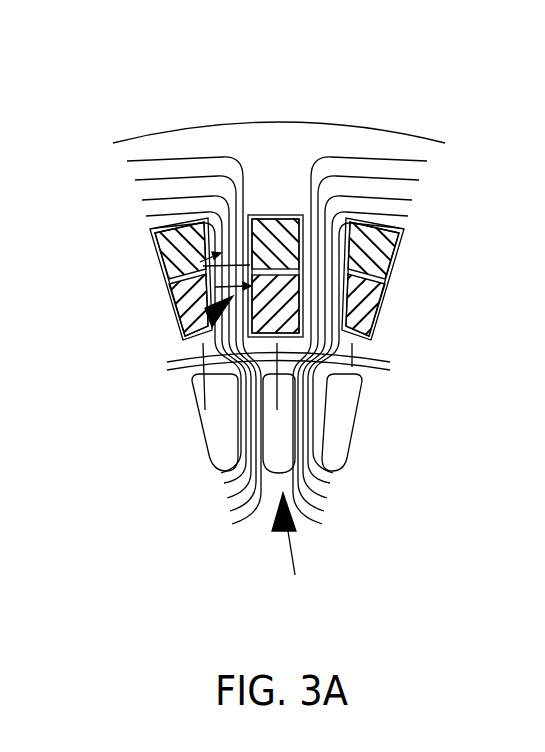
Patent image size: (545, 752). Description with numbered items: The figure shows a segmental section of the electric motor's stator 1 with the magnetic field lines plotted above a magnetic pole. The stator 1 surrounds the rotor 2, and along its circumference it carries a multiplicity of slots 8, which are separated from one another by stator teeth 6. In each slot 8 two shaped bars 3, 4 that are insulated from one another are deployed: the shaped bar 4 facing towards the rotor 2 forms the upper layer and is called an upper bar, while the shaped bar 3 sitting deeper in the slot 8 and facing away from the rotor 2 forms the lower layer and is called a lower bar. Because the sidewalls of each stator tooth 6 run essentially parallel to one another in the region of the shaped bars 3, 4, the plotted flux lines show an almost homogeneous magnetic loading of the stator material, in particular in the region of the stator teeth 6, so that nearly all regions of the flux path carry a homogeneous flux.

The stator 1 is at (218, 126).
The rotor 2 is at (292, 560).
The shaped bar (lower bar) 3 is at (403, 252).
The shaped bar (upper bar) 4 is at (382, 310).
The stator tooth 6 is at (178, 337).
The slot 8 is at (380, 333).